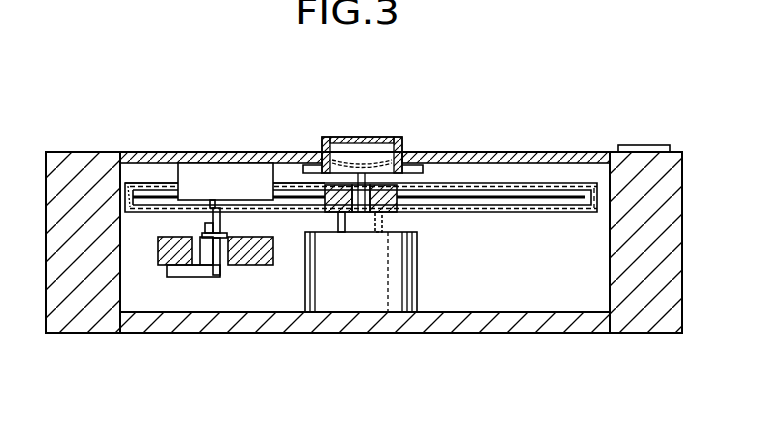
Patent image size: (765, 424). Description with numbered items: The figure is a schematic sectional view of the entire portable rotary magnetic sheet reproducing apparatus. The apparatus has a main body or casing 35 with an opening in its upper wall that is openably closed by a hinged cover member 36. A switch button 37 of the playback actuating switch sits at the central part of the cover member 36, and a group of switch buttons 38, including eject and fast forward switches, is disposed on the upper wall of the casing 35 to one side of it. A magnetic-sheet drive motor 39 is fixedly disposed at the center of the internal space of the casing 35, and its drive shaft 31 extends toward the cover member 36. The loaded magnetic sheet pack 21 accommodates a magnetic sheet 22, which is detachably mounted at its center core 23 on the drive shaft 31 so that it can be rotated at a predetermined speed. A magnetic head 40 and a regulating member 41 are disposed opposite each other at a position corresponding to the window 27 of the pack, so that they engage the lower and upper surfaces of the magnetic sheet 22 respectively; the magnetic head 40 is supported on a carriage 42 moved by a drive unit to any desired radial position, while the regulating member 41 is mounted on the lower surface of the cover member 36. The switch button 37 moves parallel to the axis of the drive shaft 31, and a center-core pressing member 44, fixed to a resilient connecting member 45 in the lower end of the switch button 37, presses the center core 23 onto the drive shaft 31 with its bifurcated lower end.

The magnetic sheet pack 21 is at (563, 182).
The magnetic sheet 22 is at (543, 205).
The center core 23 is at (395, 190).
The window 27 is at (178, 216).
The drive shaft 31 is at (385, 216).
The casing 35 is at (88, 151).
The cover member 36 is at (518, 152).
The switch button 37 is at (377, 137).
The group of switch buttons 38 is at (650, 145).
The magnetic-sheet drive motor 39 is at (417, 278).
The magnetic head 40 is at (228, 215).
The regulating member 41 is at (212, 180).
The carriage 42 is at (250, 263).
The center-core pressing member 44 is at (303, 165).
The connecting member 45 is at (350, 136).